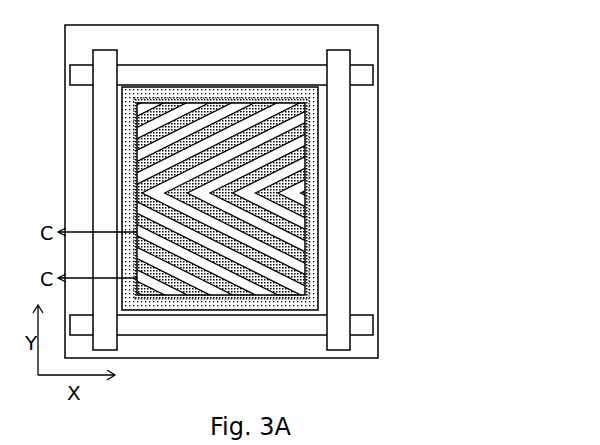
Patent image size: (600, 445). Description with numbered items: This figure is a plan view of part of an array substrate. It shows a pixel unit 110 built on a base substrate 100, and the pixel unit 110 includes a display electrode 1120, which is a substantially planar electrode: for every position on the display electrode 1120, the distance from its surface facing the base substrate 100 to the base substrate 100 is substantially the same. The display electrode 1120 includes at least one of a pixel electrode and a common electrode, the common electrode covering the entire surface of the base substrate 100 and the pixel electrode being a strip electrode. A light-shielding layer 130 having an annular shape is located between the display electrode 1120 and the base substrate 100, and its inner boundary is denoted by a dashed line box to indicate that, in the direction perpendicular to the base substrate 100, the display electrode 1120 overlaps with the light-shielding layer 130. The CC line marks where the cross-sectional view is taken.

The base substrate 100 is at (363, 52).
The pixel unit 110 is at (300, 222).
The display electrode 1120 is at (300, 222).
The light-shielding layer 130 is at (317, 128).